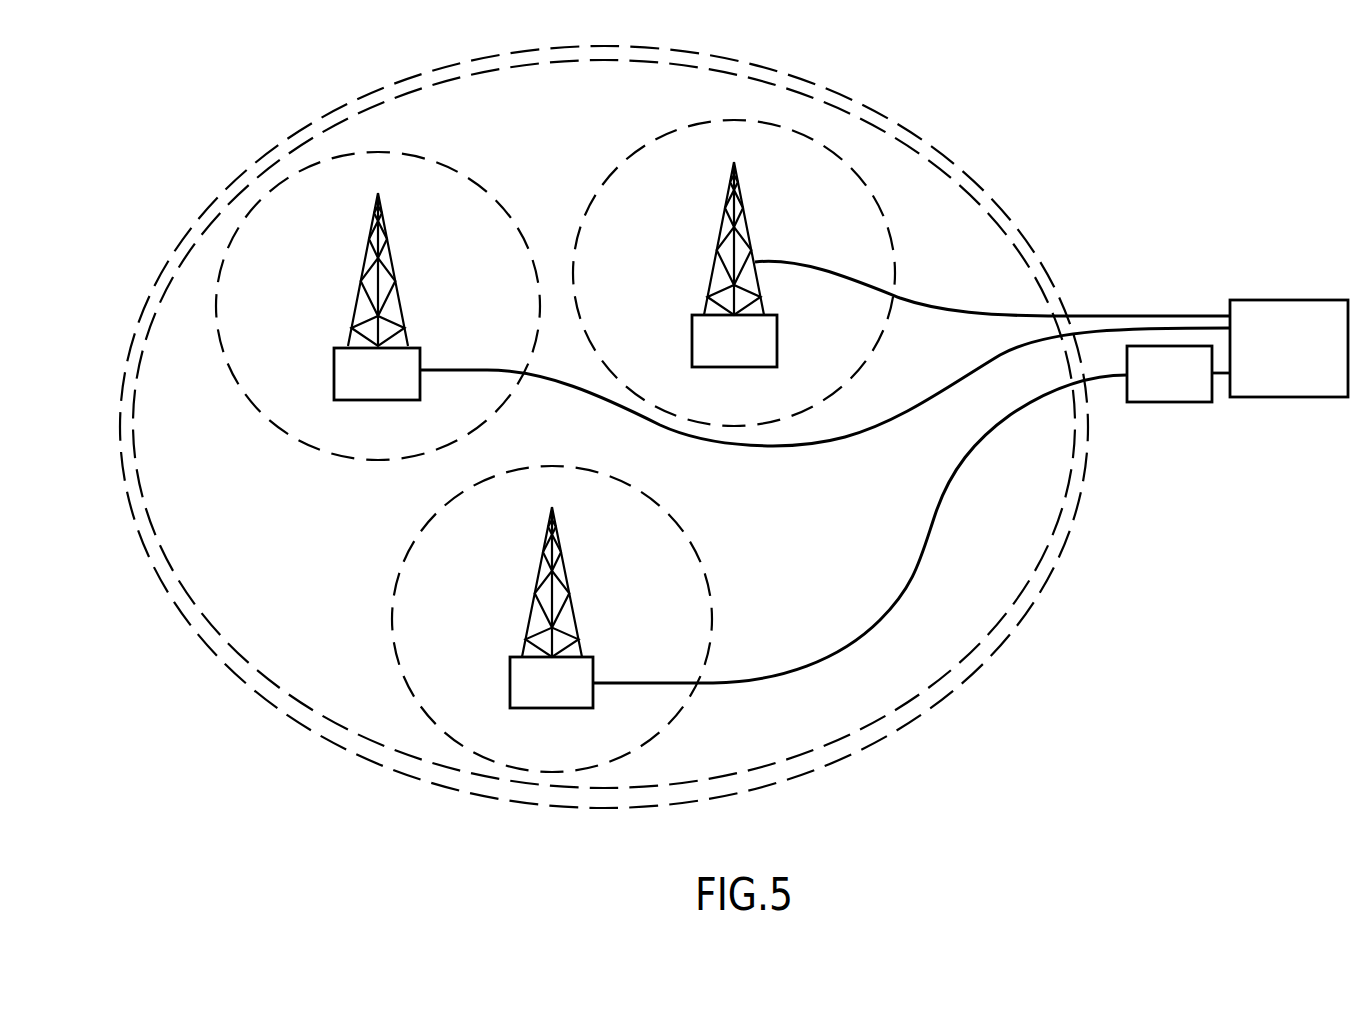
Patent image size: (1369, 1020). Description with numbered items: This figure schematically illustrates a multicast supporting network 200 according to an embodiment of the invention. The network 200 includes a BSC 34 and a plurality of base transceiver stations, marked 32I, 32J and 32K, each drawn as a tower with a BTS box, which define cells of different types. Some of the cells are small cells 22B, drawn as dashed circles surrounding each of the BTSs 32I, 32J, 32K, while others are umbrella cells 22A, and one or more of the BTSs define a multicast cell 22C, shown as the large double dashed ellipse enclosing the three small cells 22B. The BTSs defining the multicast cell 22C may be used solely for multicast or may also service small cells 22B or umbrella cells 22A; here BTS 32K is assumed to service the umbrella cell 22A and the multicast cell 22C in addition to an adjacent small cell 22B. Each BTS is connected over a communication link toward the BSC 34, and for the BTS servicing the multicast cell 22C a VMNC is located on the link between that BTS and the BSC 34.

The multicast supporting network 200 is at (1118, 138).
The multicast cell 22C is at (978, 192).
The small cell 22B is at (457, 172).
The umbrella cell 22A is at (1070, 316).
The BTS 32I is at (333, 374).
The BTS 32J is at (777, 341).
The BTS 32K is at (510, 683).
The BSC 34 is at (1275, 300).